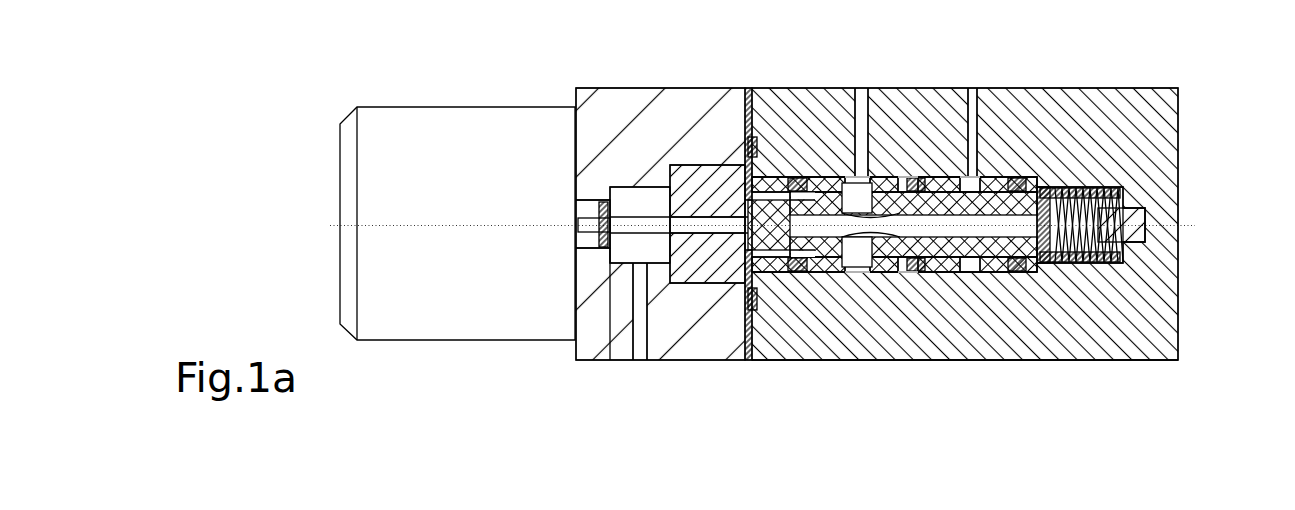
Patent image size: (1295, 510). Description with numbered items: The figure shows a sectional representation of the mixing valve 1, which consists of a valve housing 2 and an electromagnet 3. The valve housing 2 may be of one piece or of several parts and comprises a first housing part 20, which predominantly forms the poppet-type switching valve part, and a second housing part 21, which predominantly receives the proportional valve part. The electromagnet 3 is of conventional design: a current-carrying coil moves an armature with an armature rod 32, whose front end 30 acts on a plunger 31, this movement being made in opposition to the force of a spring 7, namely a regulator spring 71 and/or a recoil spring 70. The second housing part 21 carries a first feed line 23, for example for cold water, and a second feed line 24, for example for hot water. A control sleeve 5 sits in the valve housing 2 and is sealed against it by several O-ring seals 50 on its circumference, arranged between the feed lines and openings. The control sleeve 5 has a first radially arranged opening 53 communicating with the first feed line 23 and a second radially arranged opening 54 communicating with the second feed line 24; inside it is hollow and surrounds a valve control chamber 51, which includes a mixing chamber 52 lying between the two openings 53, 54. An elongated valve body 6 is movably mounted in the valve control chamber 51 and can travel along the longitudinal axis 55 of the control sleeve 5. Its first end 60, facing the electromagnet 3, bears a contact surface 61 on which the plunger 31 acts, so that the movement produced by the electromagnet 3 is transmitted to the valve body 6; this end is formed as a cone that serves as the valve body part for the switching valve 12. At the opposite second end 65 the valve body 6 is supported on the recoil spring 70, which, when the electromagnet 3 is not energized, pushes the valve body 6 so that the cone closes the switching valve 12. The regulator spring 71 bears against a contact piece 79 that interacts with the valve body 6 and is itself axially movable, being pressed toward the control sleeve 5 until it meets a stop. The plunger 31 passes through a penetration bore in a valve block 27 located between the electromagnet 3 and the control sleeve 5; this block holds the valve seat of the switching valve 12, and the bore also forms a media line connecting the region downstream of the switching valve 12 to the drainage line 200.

The mixing valve 1 is at (1180, 86).
The valve housing 2 is at (1158, 338).
The electromagnet 3 is at (418, 128).
The control sleeve 5 is at (890, 272).
The valve body 6 is at (958, 275).
The spring 7 is at (1149, 150).
The switching valve 12 is at (750, 110).
The first housing part 20 is at (697, 100).
The second housing part 21 is at (1105, 112).
The first feed line 23 is at (862, 88).
The second feed line 24 is at (983, 88).
The valve block 27 is at (680, 165).
The front end 30 is at (610, 360).
The plunger 31 is at (620, 187).
The armature rod 32 is at (570, 152).
The O-ring seals 50 is at (795, 272).
The valve control chamber 51 is at (908, 180).
The mixing chamber 52 is at (902, 272).
The first radially arranged opening 53 is at (850, 178).
The second radially arranged opening 54 is at (962, 176).
The longitudinal axis 55 is at (852, 272).
The first end 60 is at (737, 292).
The contact surface 61 is at (748, 137).
The second end 65 is at (1112, 262).
The recoil spring 70 is at (1147, 218).
The regulator spring 71 is at (1045, 185).
The contact piece 79 is at (1043, 280).
The drainage line 200 is at (640, 363).